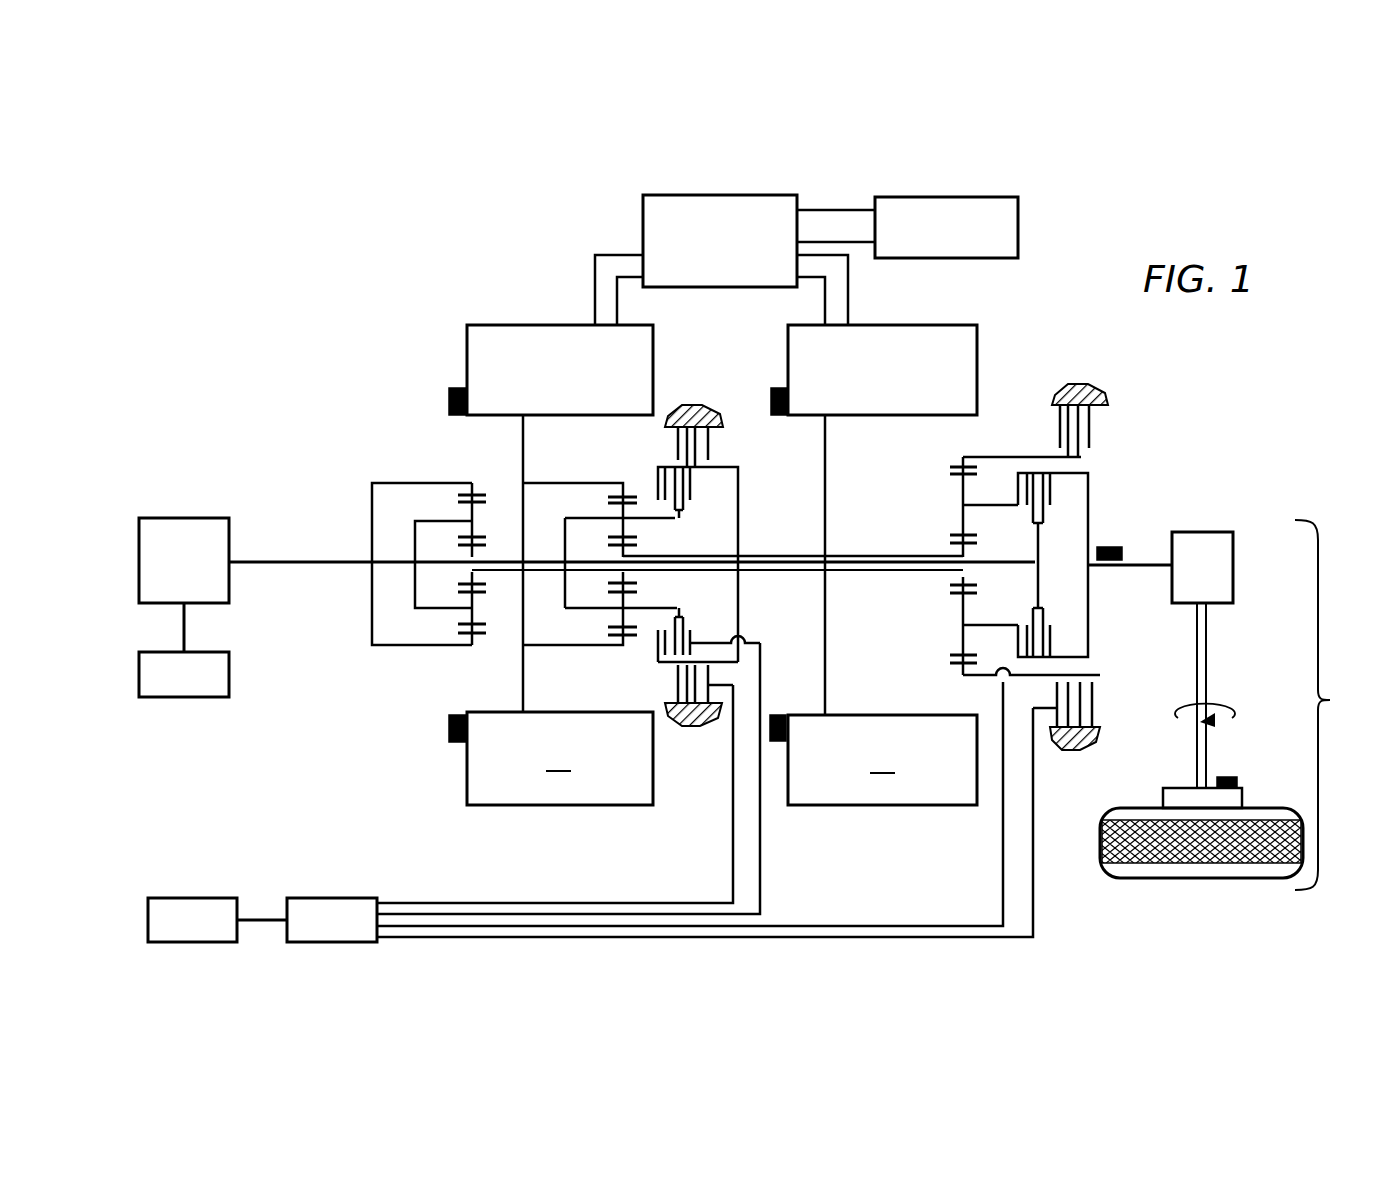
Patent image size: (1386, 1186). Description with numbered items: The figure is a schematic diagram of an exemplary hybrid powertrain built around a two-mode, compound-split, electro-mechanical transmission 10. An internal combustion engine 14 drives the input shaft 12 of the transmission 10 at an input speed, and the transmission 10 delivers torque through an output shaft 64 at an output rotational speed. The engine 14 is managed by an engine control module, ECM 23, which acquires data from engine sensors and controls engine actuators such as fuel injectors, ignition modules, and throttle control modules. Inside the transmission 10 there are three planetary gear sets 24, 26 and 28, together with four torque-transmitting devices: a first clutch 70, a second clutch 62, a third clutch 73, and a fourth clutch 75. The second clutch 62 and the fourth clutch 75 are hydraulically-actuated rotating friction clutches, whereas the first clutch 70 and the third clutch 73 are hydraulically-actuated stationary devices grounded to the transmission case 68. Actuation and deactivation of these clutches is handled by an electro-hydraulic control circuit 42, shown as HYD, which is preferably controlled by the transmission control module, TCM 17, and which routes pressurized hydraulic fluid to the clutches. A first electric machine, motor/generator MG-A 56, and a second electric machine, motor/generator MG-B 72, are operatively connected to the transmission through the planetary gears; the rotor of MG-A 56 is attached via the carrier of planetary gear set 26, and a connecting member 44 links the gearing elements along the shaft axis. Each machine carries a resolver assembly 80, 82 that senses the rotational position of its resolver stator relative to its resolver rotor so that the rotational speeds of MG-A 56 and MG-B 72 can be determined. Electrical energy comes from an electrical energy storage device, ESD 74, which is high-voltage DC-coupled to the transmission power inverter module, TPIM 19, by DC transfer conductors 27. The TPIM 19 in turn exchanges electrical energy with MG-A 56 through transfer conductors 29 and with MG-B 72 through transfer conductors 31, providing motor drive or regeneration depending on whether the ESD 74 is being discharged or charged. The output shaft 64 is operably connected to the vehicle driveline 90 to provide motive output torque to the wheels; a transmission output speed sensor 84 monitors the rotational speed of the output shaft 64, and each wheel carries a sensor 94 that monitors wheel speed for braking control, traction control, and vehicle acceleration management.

The transmission 10 is at (428, 290).
The input shaft 12 is at (332, 558).
The engine 14 is at (188, 517).
The transmission control module 17 is at (184, 897).
The transmission power inverter module 19 is at (642, 208).
The engine control module 23 is at (230, 691).
The first planetary gear set 24 is at (460, 476).
The second planetary gear set 26 is at (616, 476).
The DC transfer conductors 27 is at (814, 208).
The third planetary gear set 28 is at (955, 462).
The transfer conductors 29 is at (594, 292).
The transfer conductors 31 is at (850, 284).
The electro-hydraulic control circuit 42 is at (302, 897).
The connecting member/shaft 44 is at (565, 590).
The first electric machine 56 is at (466, 352).
The clutch C2 62 is at (1060, 508).
The output shaft 64 is at (1143, 560).
The transmission case 68 is at (692, 406).
The clutch C1 70 is at (1048, 415).
The second electric machine 72 is at (980, 344).
The clutch C3 73 is at (718, 447).
The electrical energy storage device 74 is at (1020, 214).
The clutch C4 75 is at (698, 492).
The resolver assembly 80 is at (448, 401).
The resolver assembly 82 is at (780, 387).
The transmission output speed sensor 84 is at (1110, 546).
The driveline 90 is at (1328, 697).
The wheel speed sensor 94 is at (1230, 776).